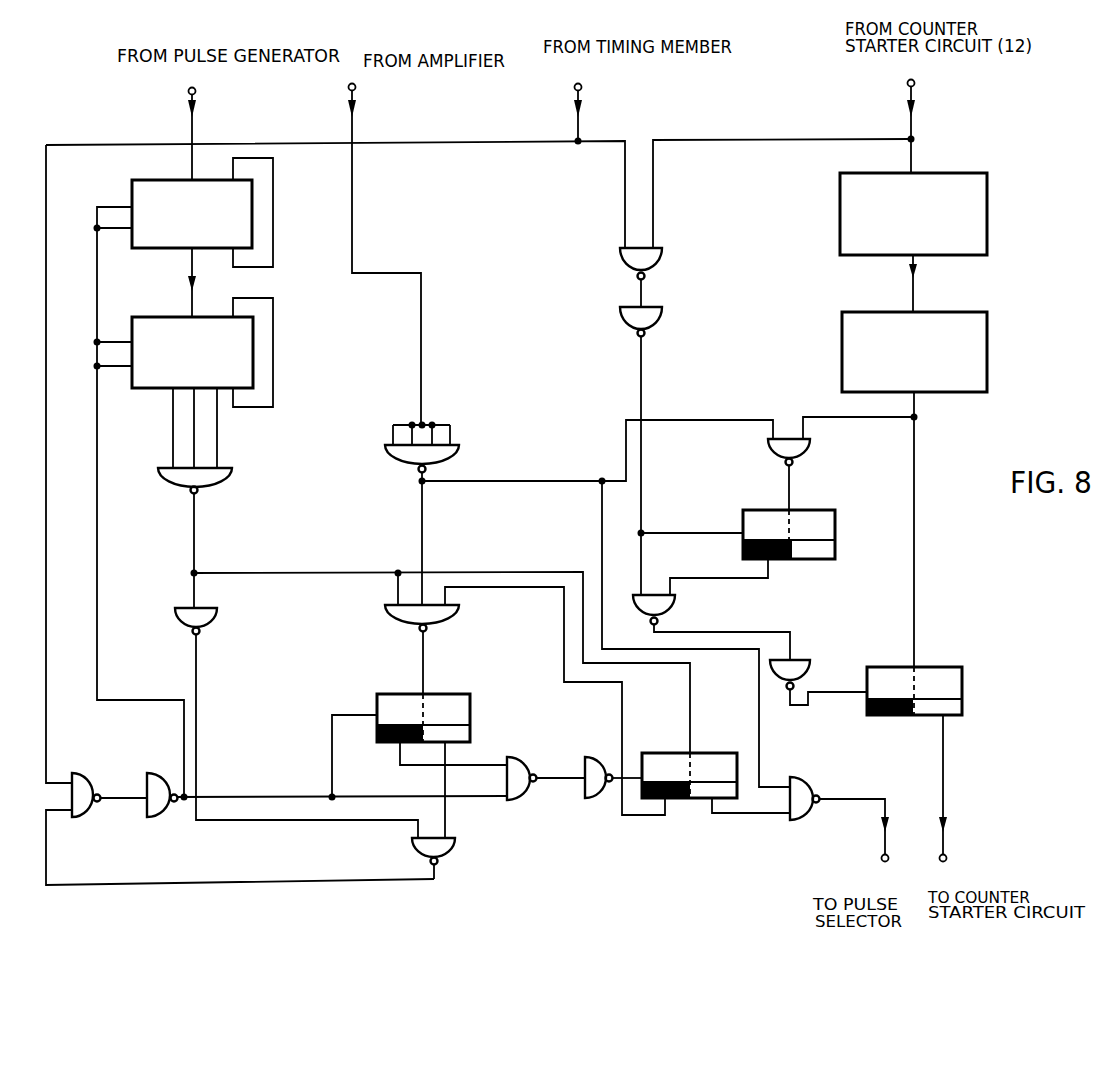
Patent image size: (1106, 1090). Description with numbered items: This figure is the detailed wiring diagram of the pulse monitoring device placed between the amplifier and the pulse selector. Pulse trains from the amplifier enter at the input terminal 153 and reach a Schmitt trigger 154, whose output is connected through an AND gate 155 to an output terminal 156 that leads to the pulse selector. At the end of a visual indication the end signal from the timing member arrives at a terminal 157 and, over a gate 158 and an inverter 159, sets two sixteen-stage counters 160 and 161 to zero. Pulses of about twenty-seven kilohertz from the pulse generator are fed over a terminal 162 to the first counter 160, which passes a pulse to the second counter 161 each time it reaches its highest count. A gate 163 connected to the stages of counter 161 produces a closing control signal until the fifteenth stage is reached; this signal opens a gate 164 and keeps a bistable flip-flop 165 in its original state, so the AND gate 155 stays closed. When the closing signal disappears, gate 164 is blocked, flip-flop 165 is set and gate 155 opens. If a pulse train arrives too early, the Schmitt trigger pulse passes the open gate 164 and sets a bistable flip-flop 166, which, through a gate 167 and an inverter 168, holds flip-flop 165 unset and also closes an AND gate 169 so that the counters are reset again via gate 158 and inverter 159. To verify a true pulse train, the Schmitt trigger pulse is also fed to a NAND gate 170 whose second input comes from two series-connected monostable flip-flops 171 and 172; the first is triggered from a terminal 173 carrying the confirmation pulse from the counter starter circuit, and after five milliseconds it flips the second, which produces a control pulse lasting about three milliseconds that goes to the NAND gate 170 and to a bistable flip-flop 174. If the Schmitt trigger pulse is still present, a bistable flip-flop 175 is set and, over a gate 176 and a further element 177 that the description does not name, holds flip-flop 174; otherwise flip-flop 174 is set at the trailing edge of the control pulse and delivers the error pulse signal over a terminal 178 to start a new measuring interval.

The input terminal 153 is at (380, 245).
The Schmitt trigger 154 is at (458, 453).
The AND gate 155 is at (803, 795).
The output terminal 156 is at (857, 845).
The terminal 157 is at (595, 101).
The gate 158 is at (80, 789).
The inverter 159 is at (156, 789).
The first counter 160 is at (252, 215).
The second counter 161 is at (253, 352).
The terminal 162 is at (195, 122).
The gate 163 is at (230, 480).
The gate 164 is at (458, 613).
The bistable flip-flop 165 is at (660, 766).
The bistable flip-flop 166 is at (455, 701).
The gate 167 is at (516, 770).
The inverter 168 is at (591, 760).
The AND gate 169 is at (447, 846).
The NAND gate 170 is at (800, 446).
The first monostable flip-flop 171 is at (968, 228).
The second monostable flip-flop 172 is at (975, 369).
The terminal 173 is at (905, 116).
The bistable flip-flop 174 is at (938, 676).
The bistable flip-flop 175 is at (830, 527).
The gate 176 is at (672, 603).
The NAND gate 177 is at (797, 670).
The terminal 178 is at (944, 803).